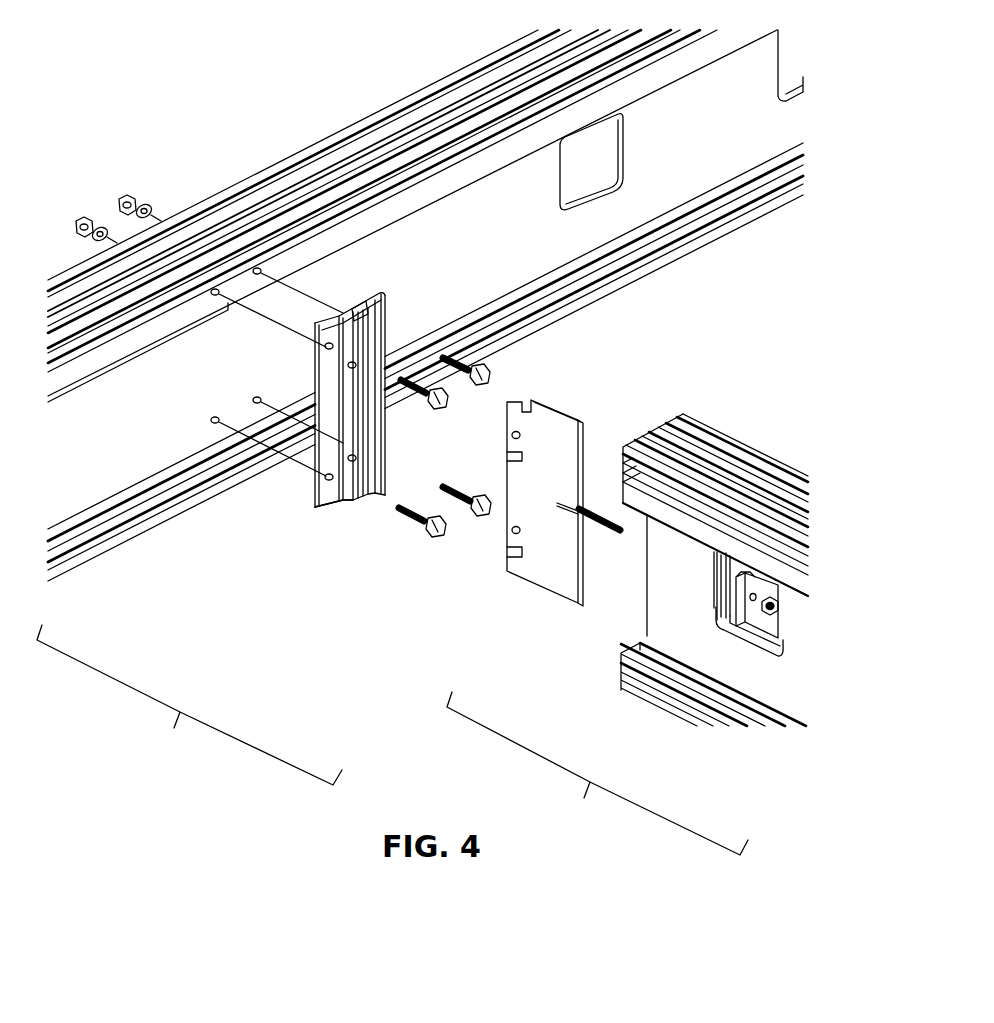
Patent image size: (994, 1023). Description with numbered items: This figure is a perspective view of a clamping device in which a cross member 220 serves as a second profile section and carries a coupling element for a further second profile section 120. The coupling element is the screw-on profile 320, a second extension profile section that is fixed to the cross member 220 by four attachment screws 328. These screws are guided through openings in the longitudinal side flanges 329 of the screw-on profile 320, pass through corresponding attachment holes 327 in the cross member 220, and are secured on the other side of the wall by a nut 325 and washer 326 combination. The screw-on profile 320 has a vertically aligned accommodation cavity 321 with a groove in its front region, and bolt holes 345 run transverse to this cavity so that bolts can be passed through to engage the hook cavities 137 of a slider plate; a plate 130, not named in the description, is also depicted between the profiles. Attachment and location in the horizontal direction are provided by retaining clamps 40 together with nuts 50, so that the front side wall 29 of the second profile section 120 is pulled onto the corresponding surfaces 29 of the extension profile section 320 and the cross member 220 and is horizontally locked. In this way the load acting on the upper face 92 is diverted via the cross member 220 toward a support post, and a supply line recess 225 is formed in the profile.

The front side wall 29 is at (513, 343).
The retaining clamp 40 is at (747, 618).
The nut 50 is at (778, 648).
The upper face 92 is at (692, 437).
The second profile section 120 is at (661, 631).
The mounting plate 130 is at (562, 587).
The hook cavity 137 is at (521, 539).
The cross member 220 is at (93, 486).
The supply line recess 225 is at (587, 168).
The second extension profile section 320 is at (318, 330).
The accommodation cavity 321 is at (358, 312).
The nut 325 is at (78, 222).
The washer 326 is at (97, 225).
The attachment hole 327 is at (215, 423).
The attachment screw 328 is at (417, 525).
The longitudinal side flange 329 is at (320, 498).
The bolt hole 345 is at (347, 500).